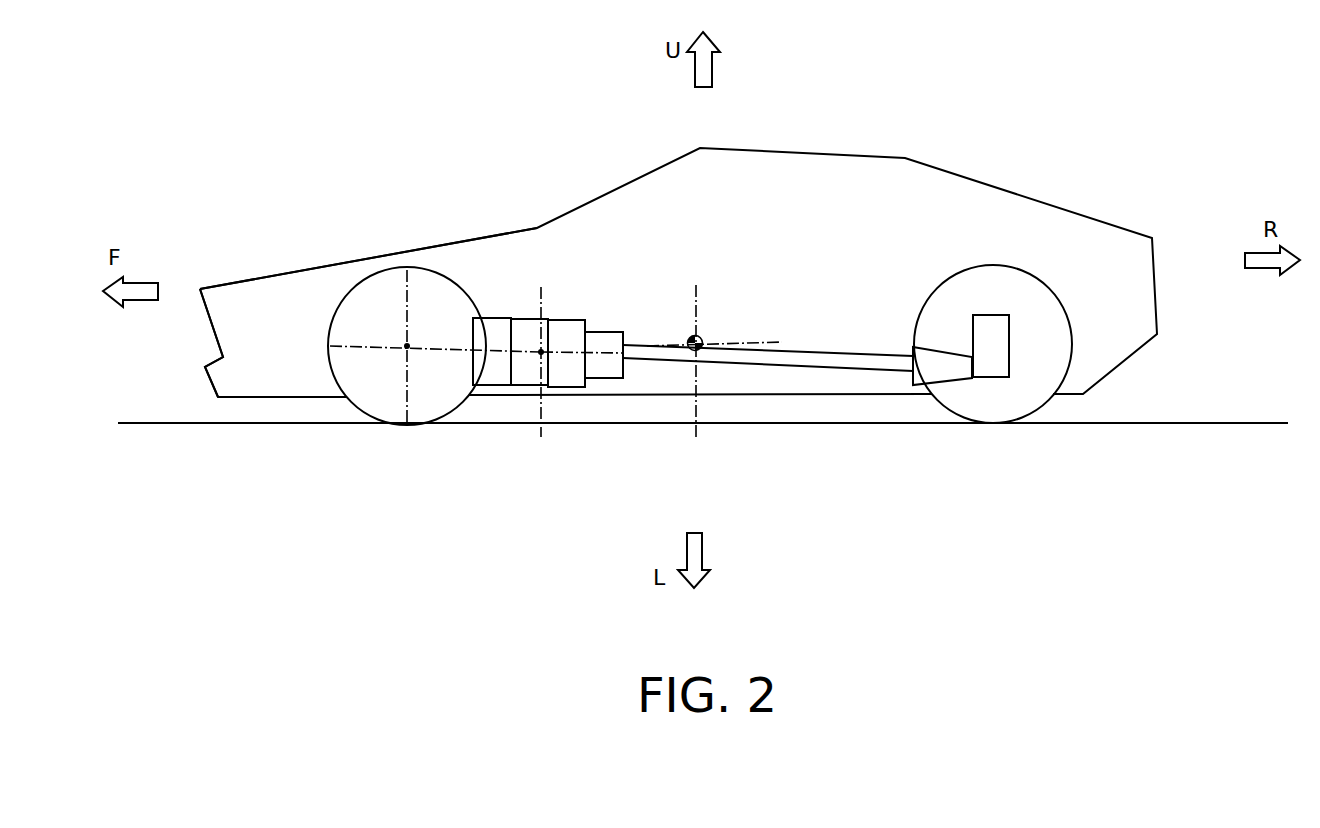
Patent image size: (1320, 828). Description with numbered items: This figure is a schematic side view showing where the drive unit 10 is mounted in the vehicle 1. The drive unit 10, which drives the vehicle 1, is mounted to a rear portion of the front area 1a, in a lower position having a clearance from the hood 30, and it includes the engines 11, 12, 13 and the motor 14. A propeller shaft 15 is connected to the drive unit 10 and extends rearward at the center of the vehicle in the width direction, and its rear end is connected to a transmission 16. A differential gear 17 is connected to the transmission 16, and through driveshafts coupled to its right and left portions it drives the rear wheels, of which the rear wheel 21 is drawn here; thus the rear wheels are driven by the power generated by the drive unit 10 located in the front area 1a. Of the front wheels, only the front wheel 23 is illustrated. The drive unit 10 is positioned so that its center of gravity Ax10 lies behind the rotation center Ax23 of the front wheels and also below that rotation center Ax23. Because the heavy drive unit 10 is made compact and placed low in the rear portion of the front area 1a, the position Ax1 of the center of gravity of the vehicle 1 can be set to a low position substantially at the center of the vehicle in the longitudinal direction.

The vehicle 1 is at (1041, 130).
The front area 1a is at (299, 286).
The hood 30 is at (380, 255).
The front wheel 23 is at (374, 393).
The rotation center of the front wheels Ax23 is at (415, 359).
The drive unit 10 is at (549, 429).
The engine 11 is at (493, 373).
The engine 12 is at (524, 373).
The engine 13 is at (563, 375).
The motor 14 is at (600, 373).
The propeller shaft 15 is at (855, 360).
The transmission 16 is at (937, 365).
The differential gear 17 is at (992, 358).
The rear wheel 21 is at (1022, 390).
The position of center of gravity of the vehicle Ax1 is at (681, 333).
The center of gravity of the drive unit Ax10 is at (530, 341).